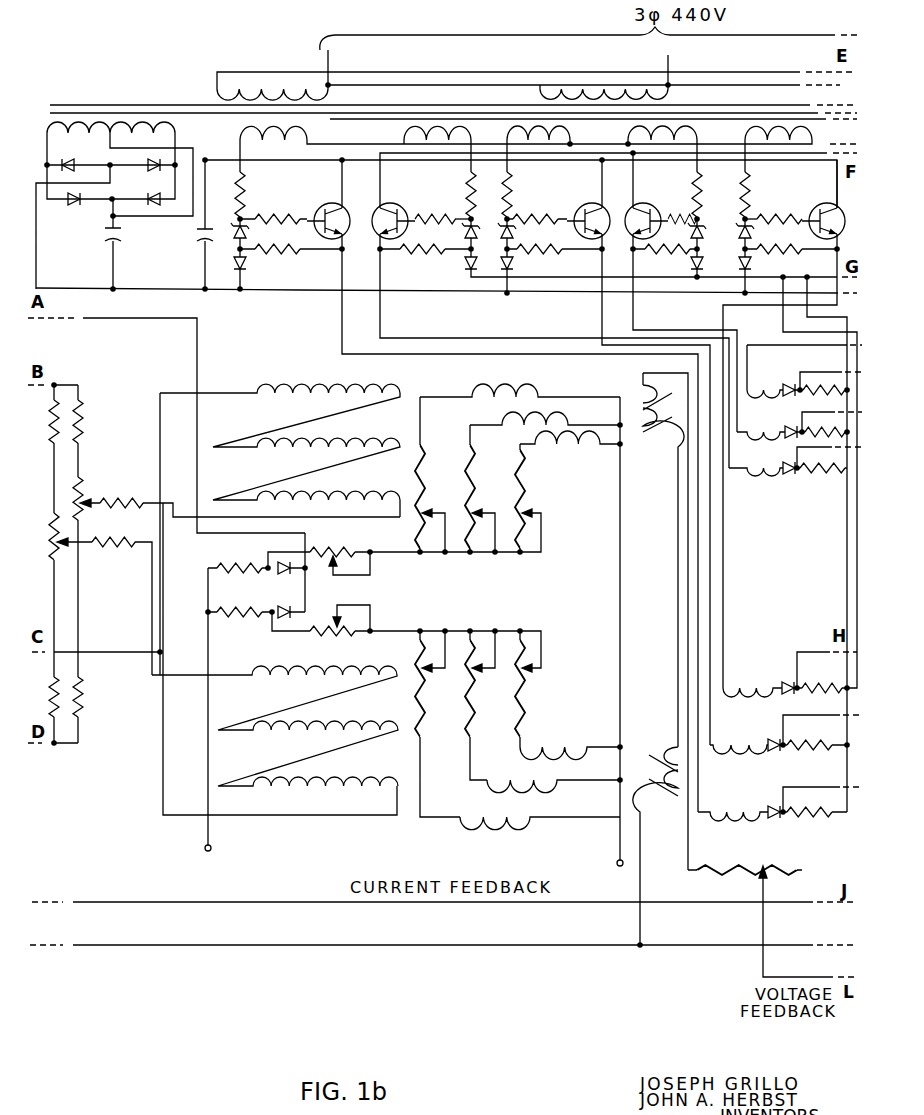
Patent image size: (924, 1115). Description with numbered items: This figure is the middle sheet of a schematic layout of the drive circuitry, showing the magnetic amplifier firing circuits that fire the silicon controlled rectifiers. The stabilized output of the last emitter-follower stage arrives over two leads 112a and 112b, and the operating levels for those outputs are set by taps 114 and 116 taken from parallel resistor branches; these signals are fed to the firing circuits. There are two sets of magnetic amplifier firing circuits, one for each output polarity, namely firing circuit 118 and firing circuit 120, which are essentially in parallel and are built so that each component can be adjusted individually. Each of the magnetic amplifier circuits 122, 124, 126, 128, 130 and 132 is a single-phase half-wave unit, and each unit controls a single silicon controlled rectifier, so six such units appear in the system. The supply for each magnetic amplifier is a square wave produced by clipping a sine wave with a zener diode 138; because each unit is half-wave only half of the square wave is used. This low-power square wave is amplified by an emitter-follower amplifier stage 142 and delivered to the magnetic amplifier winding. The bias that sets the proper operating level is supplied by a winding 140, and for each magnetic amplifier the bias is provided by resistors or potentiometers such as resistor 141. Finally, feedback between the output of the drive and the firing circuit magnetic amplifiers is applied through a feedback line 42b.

The tap 114 is at (182, 494).
The lead 112a is at (163, 623).
The lead 112b is at (163, 734).
The tap 116 is at (218, 675).
The magnetic amplifier firing circuit 118 is at (763, 843).
The magnetic amplifier firing circuit 120 is at (783, 520).
The magnetic amplifier circuit 122 is at (715, 812).
The magnetic amplifier circuit 124 is at (716, 747).
The magnetic amplifier circuit 126 is at (730, 688).
The magnetic amplifier circuit 128 is at (760, 468).
The magnetic amplifier circuit 130 is at (762, 432).
The magnetic amplifier circuit 132 is at (765, 387).
The zener diode 138 is at (509, 220).
The bias winding 140 is at (540, 799).
The resistor 141 is at (548, 530).
The emitter-follower amplifier stage 142 is at (592, 203).
The feedback line 42b is at (796, 921).